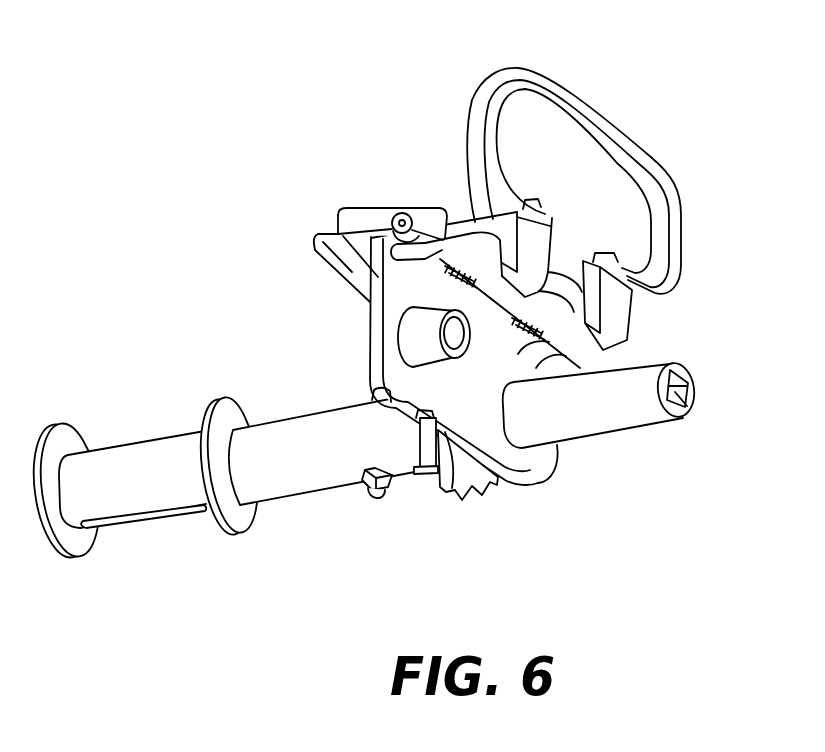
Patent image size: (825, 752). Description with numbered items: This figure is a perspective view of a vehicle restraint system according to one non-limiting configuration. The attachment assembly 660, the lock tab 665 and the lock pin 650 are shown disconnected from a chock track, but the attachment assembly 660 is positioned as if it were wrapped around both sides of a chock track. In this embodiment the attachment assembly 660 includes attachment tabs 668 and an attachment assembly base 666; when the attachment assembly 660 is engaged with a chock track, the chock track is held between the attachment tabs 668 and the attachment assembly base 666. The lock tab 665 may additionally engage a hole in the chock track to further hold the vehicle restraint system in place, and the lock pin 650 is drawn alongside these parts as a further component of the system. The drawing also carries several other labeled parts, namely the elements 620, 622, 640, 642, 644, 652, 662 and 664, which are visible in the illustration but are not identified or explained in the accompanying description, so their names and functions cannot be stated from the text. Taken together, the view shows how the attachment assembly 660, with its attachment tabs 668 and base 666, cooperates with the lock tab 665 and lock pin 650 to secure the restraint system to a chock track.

The tube 620 is at (275, 488).
The rod 622 is at (140, 517).
The nut 640 is at (380, 503).
The clamp wedge 642 is at (313, 238).
The claw plate 644 is at (467, 500).
The lock pin 650 is at (593, 420).
The square hole 652 is at (690, 407).
The attachment assembly 660 is at (705, 190).
The threaded screw 662 is at (453, 268).
The bracket 664 is at (521, 378).
The lock tab 665 is at (420, 333).
The attachment assembly base 666 is at (523, 460).
The attachment tabs 668 is at (473, 226).